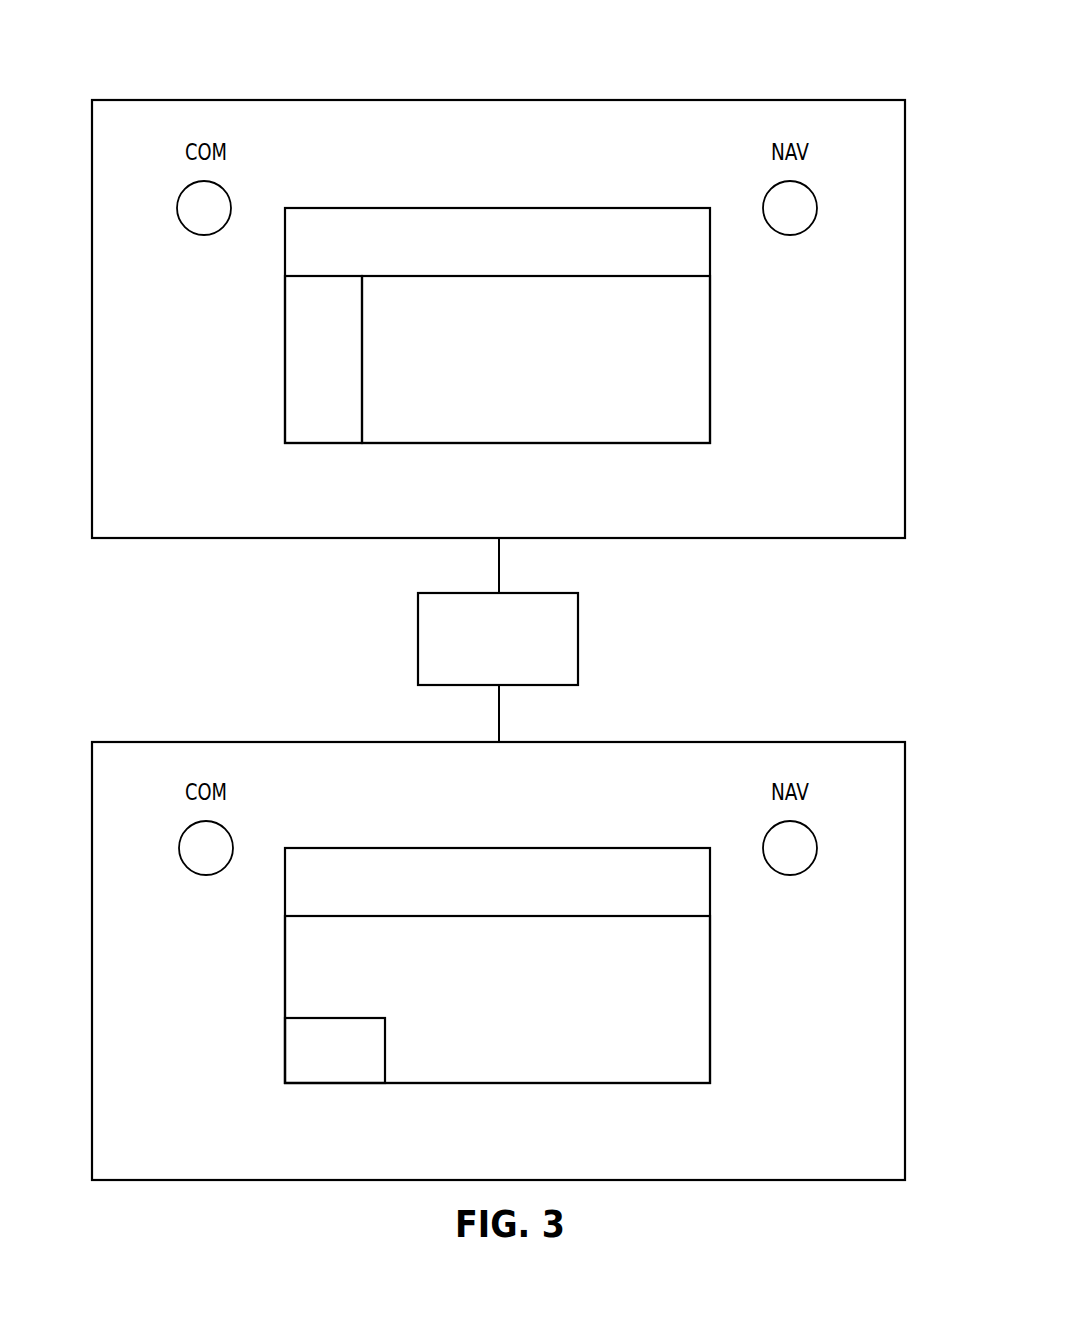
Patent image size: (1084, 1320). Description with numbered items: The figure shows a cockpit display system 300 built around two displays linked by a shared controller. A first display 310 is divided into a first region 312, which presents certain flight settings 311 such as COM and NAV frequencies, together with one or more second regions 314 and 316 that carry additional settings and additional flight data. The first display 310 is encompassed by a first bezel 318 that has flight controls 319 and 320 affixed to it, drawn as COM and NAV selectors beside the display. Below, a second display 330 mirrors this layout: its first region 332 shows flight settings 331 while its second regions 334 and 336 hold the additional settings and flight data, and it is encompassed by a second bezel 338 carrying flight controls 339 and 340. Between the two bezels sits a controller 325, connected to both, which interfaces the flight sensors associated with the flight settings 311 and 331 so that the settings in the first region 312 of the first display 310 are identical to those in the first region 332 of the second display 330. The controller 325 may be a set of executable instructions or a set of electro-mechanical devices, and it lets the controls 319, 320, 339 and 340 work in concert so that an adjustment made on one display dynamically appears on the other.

The cockpit display system 300 is at (812, 57).
The first display 310 is at (403, 208).
The flight settings 311 is at (563, 255).
The first region 312 is at (523, 268).
The second region 314 is at (511, 359).
The second region 316 is at (341, 361).
The first bezel 318 is at (637, 112).
The flight control 319 is at (190, 232).
The flight control 320 is at (809, 228).
The controller 325 is at (580, 638).
The second display 330 is at (403, 848).
The flight settings 331 is at (563, 895).
The first region 332 is at (523, 908).
The second region 334 is at (511, 1000).
The second region 336 is at (353, 1064).
The second bezel 338 is at (637, 754).
The flight control 339 is at (192, 872).
The flight control 340 is at (809, 868).